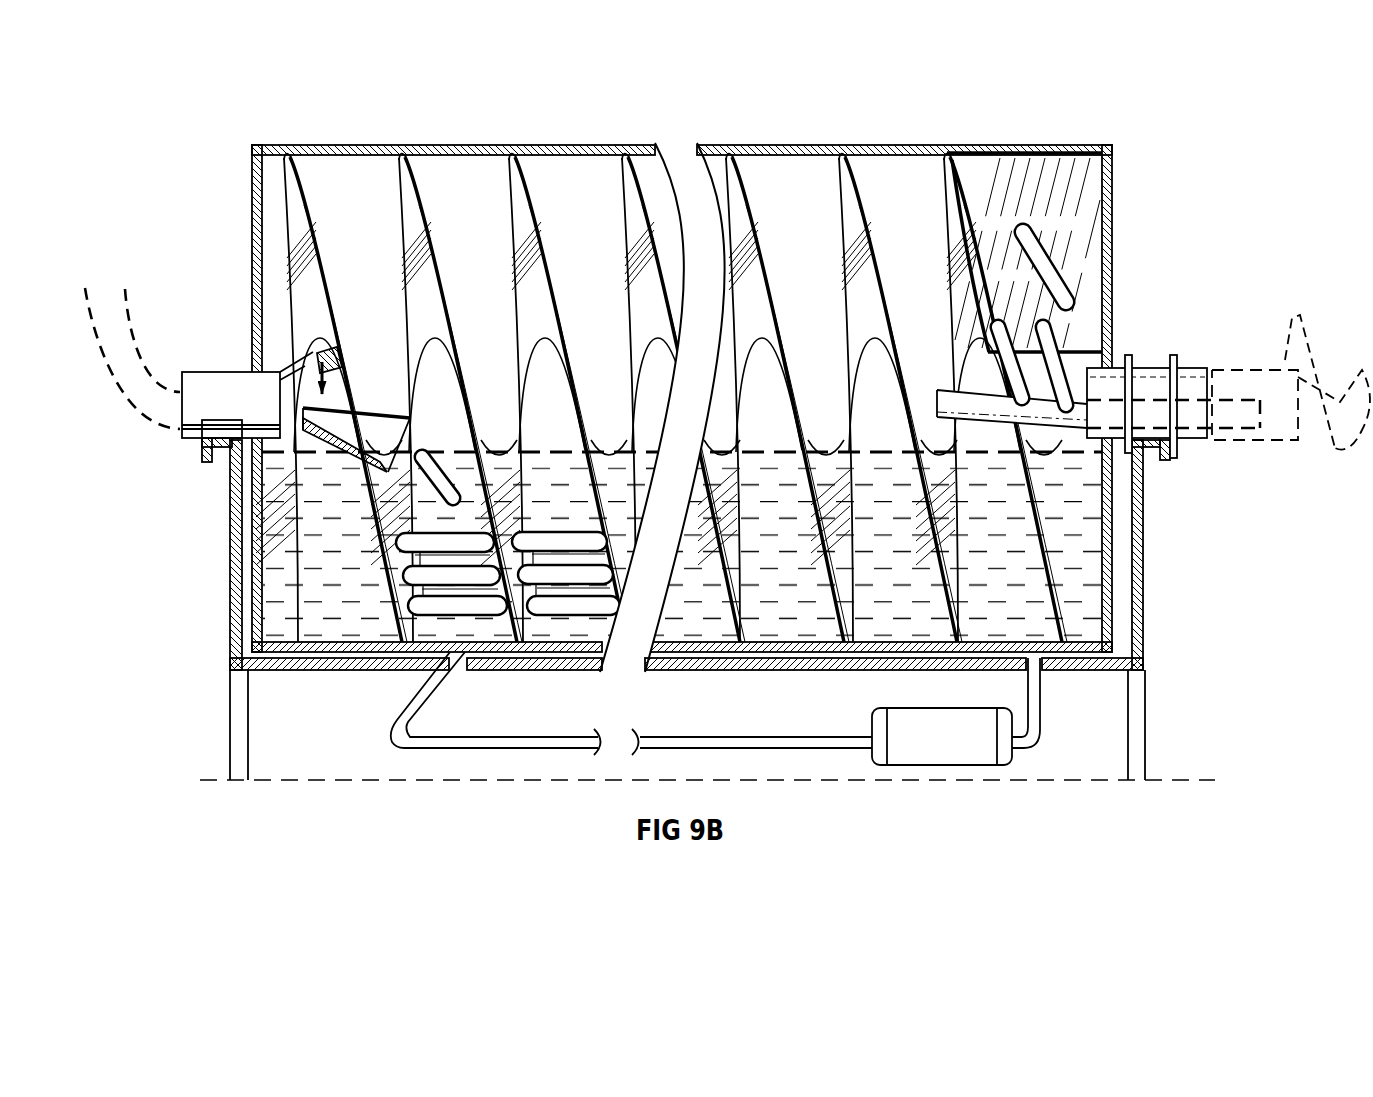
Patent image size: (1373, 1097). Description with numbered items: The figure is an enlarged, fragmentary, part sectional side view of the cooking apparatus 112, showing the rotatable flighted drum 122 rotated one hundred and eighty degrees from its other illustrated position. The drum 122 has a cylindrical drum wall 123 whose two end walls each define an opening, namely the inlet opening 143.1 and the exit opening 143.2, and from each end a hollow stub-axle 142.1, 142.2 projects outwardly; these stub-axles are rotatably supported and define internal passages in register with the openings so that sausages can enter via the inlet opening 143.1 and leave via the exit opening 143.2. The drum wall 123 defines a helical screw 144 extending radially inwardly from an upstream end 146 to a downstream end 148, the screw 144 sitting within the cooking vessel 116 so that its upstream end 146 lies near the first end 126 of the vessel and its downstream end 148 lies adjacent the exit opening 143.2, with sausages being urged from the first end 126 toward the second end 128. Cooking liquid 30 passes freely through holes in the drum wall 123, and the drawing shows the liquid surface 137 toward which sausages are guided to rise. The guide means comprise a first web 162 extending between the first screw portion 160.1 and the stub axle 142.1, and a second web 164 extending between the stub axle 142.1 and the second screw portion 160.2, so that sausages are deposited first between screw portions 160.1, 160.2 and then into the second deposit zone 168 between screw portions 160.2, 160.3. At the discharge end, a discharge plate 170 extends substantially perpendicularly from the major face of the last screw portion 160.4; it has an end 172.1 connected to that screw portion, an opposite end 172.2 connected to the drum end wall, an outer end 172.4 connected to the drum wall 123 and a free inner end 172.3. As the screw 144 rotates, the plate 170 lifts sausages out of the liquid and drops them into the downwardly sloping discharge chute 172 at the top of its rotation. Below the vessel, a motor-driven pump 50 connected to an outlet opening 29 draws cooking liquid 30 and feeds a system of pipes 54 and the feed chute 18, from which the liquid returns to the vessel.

The upstream end 146 is at (379, 383).
The feed chute 18 is at (140, 300).
The stub-axle 142.1 is at (218, 383).
The inlet opening 143.1 is at (337, 350).
The first web 162 is at (338, 382).
The second web 164 is at (343, 430).
The first screw portion 160.1 is at (296, 197).
The second screw portion 160.2 is at (417, 188).
The third screw portion 160.3 is at (527, 192).
The last screw portion 160.4 is at (953, 168).
The drum wall 123 is at (385, 147).
The surface 137 is at (548, 440).
The rotatable flighted drum 122 is at (745, 186).
The cooking apparatus 112 is at (854, 106).
The helical screw 144 is at (868, 176).
The outer end 172.4 is at (1069, 150).
The end 172.1 is at (986, 264).
The downstream end 148 is at (1148, 171).
The discharge plate 170 is at (1066, 203).
The opposite end 172.2 is at (1091, 274).
The stub-axle 142.2 is at (1150, 367).
The exit opening 143.2 is at (1212, 362).
The free inner end 172.3 is at (1076, 362).
The discharge chute 172 is at (980, 405).
The first end 126 is at (209, 593).
The cooking vessel 116 is at (240, 637).
The second end 128 is at (1152, 638).
The second deposit zone 168 is at (462, 622).
The cooking liquid 30 is at (907, 607).
The outlet opening 29 is at (1037, 715).
The system of pipes 54 is at (400, 752).
The pump 50 is at (928, 736).